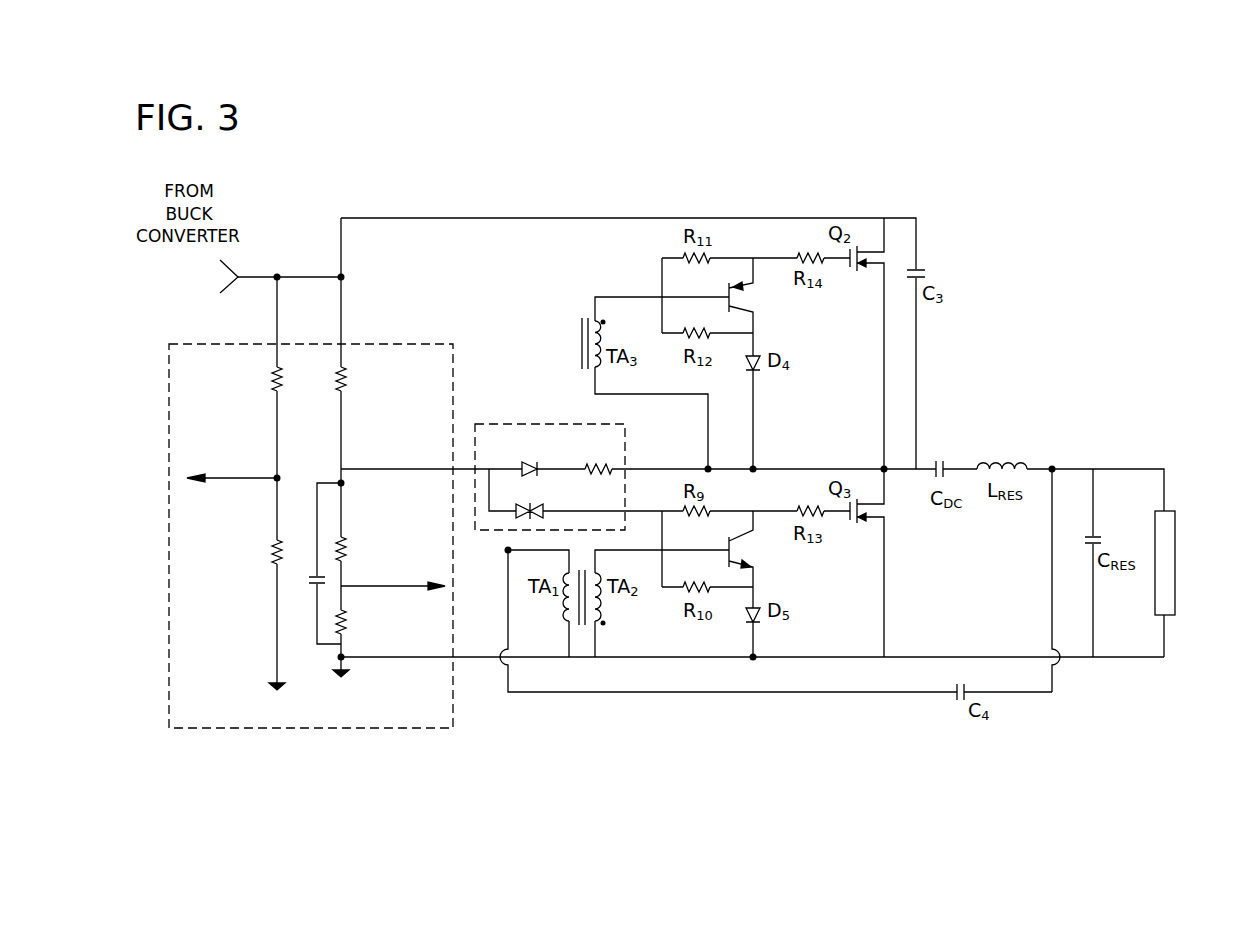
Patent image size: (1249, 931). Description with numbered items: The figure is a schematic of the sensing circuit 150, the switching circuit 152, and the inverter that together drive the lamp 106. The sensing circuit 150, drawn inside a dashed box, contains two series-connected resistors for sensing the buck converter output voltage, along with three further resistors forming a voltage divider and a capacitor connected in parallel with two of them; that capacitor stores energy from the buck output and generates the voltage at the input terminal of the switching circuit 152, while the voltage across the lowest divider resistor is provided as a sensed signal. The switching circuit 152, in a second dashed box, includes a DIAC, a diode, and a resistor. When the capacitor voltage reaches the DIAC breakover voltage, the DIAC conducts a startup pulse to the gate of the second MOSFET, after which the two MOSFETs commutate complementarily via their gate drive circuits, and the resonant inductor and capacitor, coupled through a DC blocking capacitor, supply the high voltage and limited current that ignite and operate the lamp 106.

The sensing circuit 150 is at (371, 730).
The switching circuit 152 is at (527, 423).
The lamp 106 is at (1177, 566).